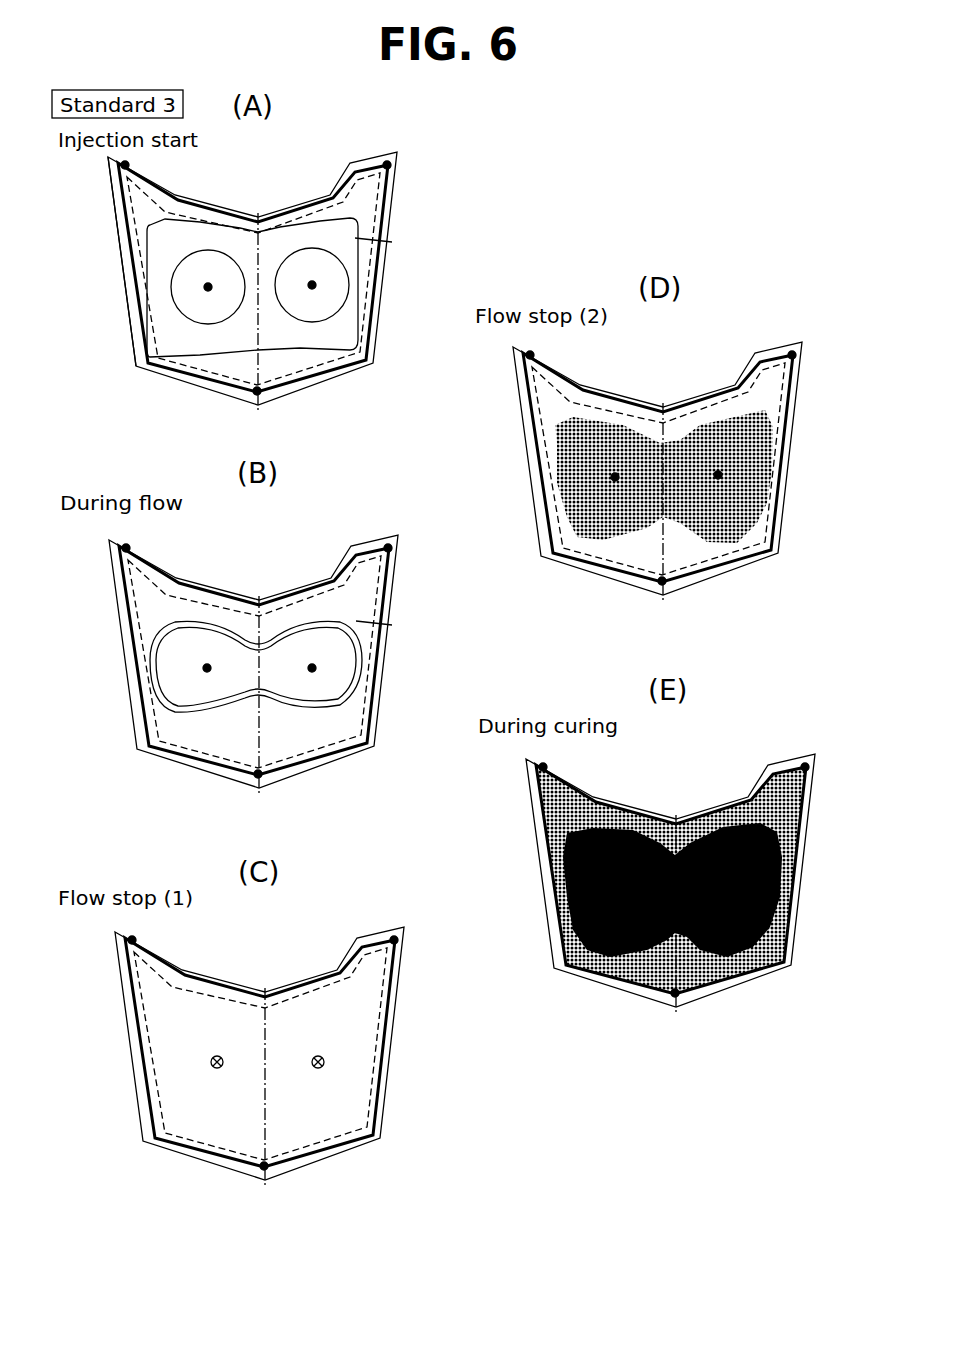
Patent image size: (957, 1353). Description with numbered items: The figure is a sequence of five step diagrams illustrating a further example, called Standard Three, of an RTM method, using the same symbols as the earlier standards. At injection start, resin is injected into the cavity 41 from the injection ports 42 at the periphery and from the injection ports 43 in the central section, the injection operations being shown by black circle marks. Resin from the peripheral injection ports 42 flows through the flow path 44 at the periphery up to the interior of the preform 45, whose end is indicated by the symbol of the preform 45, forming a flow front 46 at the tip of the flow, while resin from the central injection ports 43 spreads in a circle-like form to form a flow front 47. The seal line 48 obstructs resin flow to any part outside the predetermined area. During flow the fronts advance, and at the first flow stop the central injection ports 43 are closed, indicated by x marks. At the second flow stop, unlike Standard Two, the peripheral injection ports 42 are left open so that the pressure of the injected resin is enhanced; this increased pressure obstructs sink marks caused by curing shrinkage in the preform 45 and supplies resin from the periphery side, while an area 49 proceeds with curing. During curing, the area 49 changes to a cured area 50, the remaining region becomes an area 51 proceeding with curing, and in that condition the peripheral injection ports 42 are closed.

The cavity 41 is at (398, 233).
The injection ports at the periphery 42 is at (128, 167).
The injection ports in the central section 43 is at (208, 287).
The flow path at the periphery 44 is at (352, 278).
The preform 45 is at (310, 367).
The flow front 46 is at (360, 245).
The flow front 47 is at (150, 335).
The seal line 48 is at (112, 223).
The area proceeding with curing 49 is at (558, 540).
The area cured 50 is at (548, 900).
The area proceeding with curing 51 is at (557, 943).